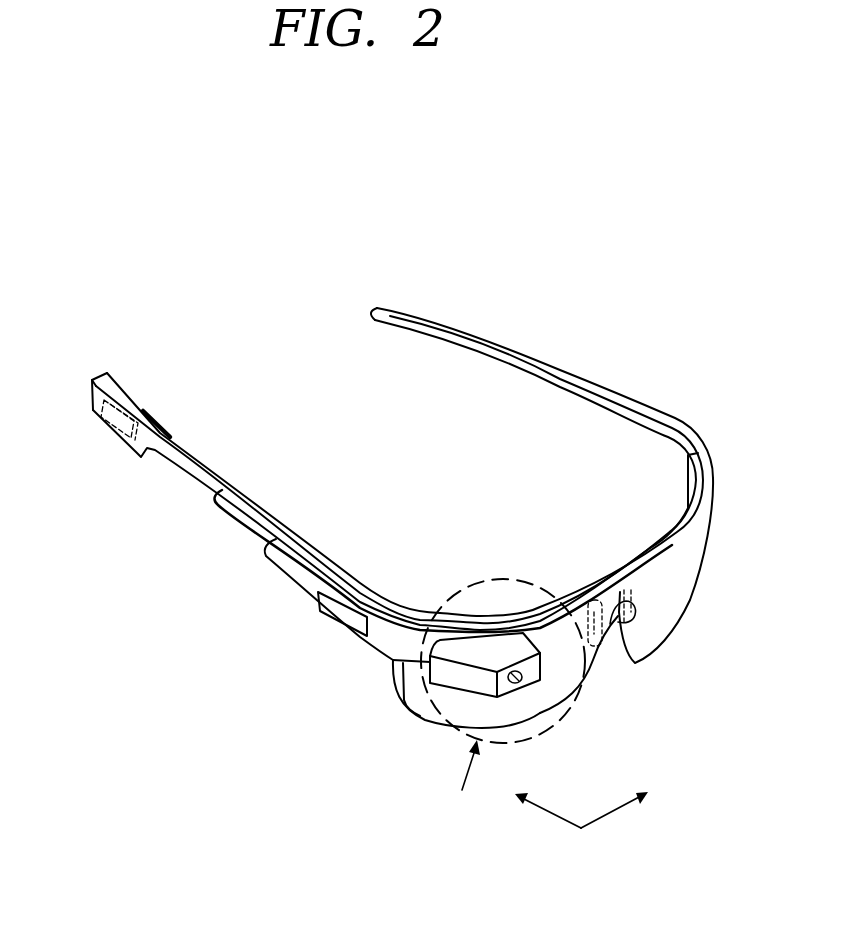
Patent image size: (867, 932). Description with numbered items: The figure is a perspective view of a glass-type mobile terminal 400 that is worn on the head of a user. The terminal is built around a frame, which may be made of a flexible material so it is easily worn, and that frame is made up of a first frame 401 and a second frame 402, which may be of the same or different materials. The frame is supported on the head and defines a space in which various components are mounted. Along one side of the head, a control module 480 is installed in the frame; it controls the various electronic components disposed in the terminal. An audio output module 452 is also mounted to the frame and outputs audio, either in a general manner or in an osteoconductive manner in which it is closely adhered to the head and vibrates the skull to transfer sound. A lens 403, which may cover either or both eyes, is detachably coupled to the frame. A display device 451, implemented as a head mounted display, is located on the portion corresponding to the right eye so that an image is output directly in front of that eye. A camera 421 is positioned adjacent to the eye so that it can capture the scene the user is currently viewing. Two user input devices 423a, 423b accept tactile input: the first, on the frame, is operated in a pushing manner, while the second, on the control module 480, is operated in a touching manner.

The glass-type mobile terminal 400 is at (500, 262).
The first frame 401 is at (567, 370).
The second frame 402 is at (193, 462).
The lens 403 is at (682, 580).
The user input device 423a is at (157, 420).
The user input device 423b is at (343, 617).
The audio output module 452 is at (103, 423).
The control module 480 is at (283, 577).
The display device 451 is at (555, 657).
The camera 421 is at (523, 684).